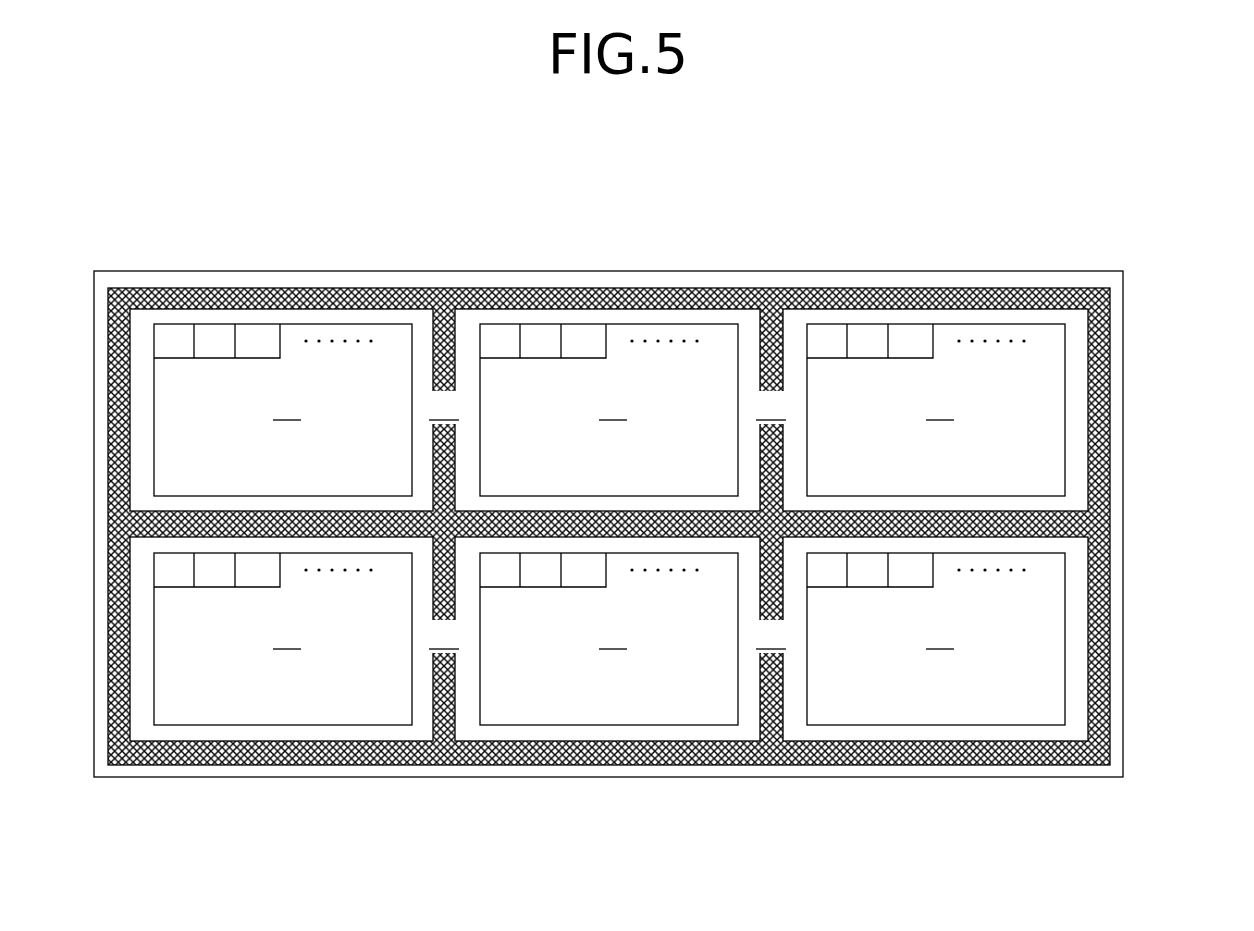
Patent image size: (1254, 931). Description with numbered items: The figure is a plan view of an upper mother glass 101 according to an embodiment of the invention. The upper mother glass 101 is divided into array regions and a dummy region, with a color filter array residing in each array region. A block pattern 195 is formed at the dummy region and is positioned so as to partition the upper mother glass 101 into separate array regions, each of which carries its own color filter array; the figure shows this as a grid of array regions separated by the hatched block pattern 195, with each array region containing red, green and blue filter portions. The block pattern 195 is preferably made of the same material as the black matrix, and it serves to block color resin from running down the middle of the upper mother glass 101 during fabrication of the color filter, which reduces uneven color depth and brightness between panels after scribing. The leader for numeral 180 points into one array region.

The upper mother glass 101 is at (1110, 354).
The pixel array / pixels 180 is at (364, 336).
The block pattern 195 is at (727, 760).